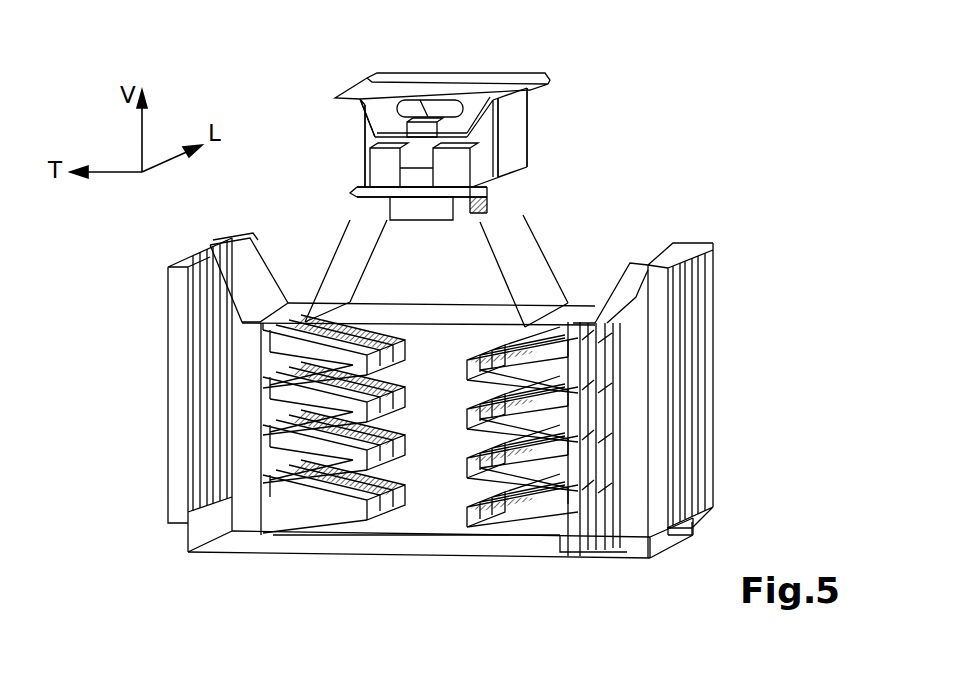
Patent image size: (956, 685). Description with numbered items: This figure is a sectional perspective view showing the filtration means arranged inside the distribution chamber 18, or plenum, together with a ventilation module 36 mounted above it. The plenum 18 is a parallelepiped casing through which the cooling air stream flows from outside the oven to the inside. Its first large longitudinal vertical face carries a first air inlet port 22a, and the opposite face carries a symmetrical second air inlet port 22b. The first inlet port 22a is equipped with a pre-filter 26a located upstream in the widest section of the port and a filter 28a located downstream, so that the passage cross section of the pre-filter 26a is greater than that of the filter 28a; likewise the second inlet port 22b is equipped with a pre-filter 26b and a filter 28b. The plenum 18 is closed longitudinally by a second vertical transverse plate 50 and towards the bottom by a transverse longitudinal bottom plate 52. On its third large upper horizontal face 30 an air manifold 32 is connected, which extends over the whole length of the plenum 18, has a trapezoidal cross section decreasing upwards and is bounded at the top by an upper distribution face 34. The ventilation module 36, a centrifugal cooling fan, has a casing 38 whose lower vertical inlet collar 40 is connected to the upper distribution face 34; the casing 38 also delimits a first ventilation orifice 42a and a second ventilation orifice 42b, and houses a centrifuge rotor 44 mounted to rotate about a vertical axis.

The distribution chamber 18 is at (698, 149).
The first air inlet port 22a is at (131, 404).
The second air inlet port 22b is at (762, 365).
The pre-filter 26a is at (205, 430).
The pre-filter 26b is at (712, 423).
The filter 28a is at (346, 530).
The filter 28b is at (495, 532).
The third large upper horizontal face 30 is at (307, 300).
The air manifold 32 is at (568, 245).
The upper distribution face 34 is at (505, 199).
The ventilation module 36 is at (537, 130).
The casing 38 is at (355, 88).
The lower vertical inlet collar 40 is at (393, 228).
The first ventilation orifice 42a is at (365, 143).
The second ventilation orifice 42b is at (482, 165).
The centrifuge rotor 44 is at (481, 138).
The second vertical transverse plate 50 is at (433, 495).
The transverse longitudinal bottom plate 52 is at (302, 560).